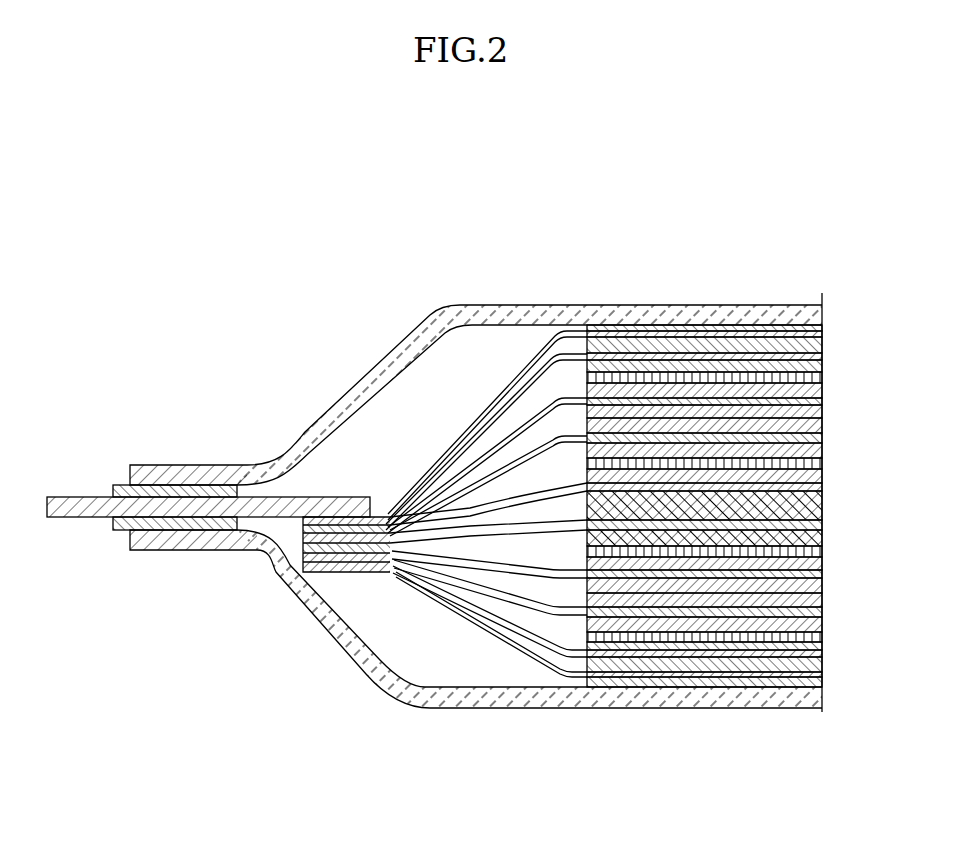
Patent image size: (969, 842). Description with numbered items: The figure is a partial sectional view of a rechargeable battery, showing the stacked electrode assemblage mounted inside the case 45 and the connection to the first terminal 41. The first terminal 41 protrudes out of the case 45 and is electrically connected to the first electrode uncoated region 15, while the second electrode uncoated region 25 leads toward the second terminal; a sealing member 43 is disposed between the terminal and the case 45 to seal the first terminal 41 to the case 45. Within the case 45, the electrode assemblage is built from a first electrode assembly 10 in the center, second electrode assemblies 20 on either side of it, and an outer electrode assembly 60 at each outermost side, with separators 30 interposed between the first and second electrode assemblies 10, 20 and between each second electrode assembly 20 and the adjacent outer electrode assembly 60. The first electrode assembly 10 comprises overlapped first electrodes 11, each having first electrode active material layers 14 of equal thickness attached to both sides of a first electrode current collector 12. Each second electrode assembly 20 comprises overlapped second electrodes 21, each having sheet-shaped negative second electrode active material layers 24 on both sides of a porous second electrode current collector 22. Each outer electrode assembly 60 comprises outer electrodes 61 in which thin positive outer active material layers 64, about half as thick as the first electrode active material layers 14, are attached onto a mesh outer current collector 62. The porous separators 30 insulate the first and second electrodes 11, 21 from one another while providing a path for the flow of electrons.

The first electrode assembly 10 is at (727, 636).
The first electrode 11 is at (704, 636).
The first electrode current collector 12 is at (620, 535).
The first electrode active material layer 14 is at (700, 515).
The first electrode uncoated region 15 is at (487, 507).
The second electrode assembly 20 is at (727, 424).
The second electrode 21 is at (704, 424).
The second electrode current collector 22 is at (720, 400).
The second electrode active material layer 24 is at (790, 420).
The second electrode uncoated region 25 is at (473, 567).
The separator 30 is at (792, 698).
The first terminal 41 is at (100, 507).
The sealing member 43 is at (150, 490).
The case 45 is at (202, 473).
The outer electrode assembly 60 is at (725, 452).
The outer electrode 61 is at (702, 452).
The outer current collector 62 is at (667, 255).
The outer active material layer 64 is at (668, 345).